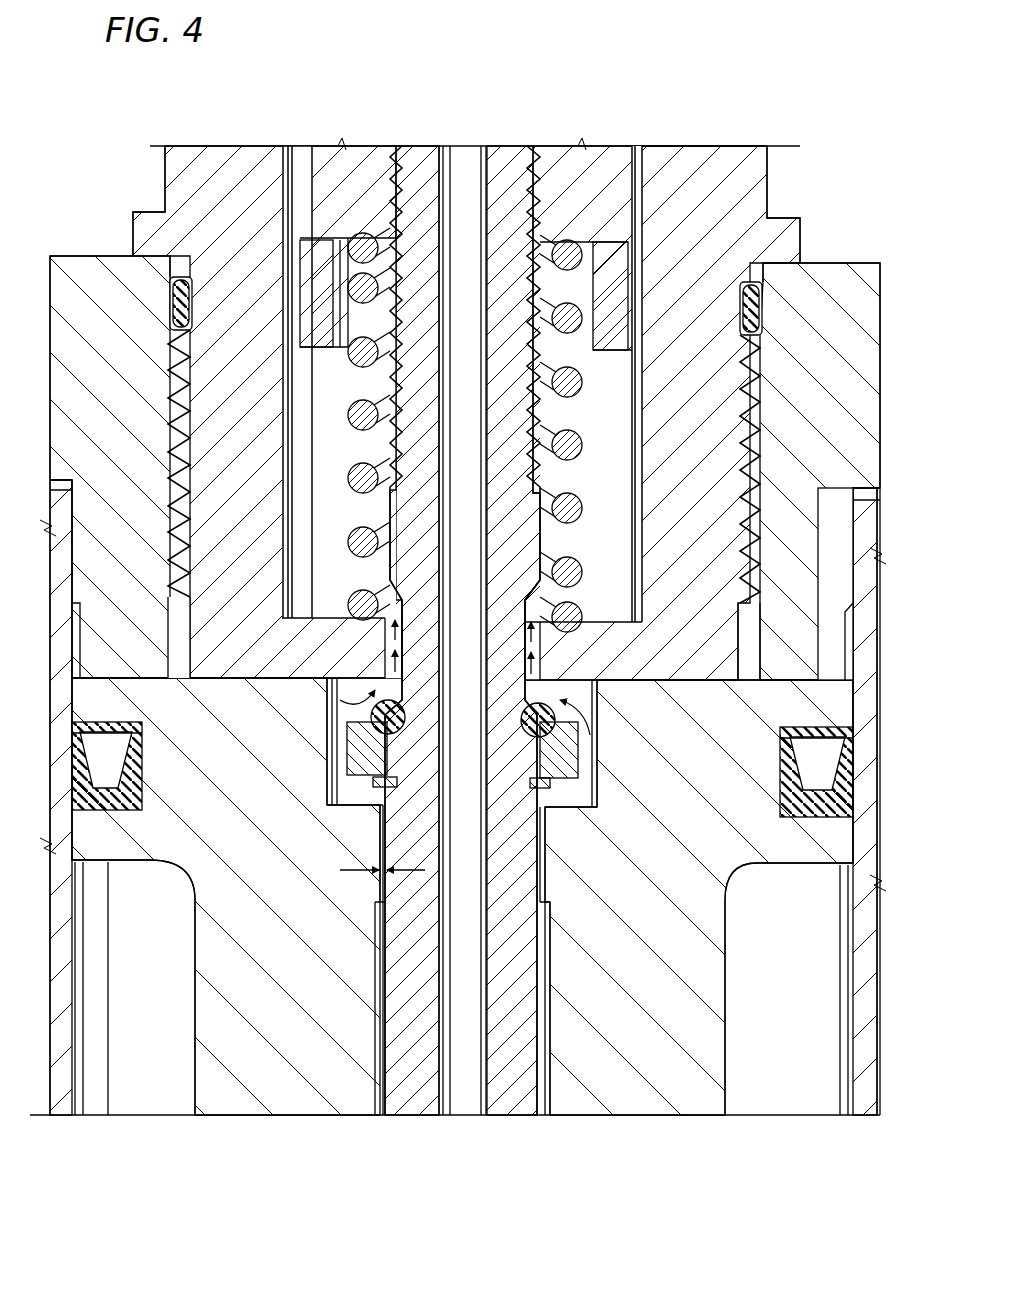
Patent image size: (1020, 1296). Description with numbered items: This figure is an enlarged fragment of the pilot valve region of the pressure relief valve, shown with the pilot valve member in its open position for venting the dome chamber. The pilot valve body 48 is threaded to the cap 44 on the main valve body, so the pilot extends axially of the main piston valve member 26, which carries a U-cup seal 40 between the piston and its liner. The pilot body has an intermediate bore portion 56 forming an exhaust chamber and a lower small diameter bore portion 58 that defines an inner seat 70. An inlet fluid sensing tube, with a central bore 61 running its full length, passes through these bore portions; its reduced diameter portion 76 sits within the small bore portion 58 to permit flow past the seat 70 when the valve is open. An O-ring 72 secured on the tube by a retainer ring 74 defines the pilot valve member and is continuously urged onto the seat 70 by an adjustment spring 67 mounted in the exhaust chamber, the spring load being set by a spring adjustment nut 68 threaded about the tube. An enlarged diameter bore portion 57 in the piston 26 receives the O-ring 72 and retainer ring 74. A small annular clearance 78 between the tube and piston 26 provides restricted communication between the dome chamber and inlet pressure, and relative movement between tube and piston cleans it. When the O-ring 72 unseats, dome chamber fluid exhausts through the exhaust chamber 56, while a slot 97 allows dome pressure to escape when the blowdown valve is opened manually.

The piston valve member 26 is at (210, 1012).
The U-cup seal 40 is at (132, 788).
The cap 44 is at (835, 275).
The pilot valve body 48 is at (753, 180).
The intermediate bore portion 56 is at (302, 480).
The enlarged diameter bore portion 57 is at (330, 810).
The lower small diameter bore portion 58 is at (385, 645).
The central bore 61 is at (480, 852).
The adjustment spring 67 is at (590, 497).
The spring adjustment nut 68 is at (315, 193).
The inner seat 70 is at (352, 706).
The O-ring 72 is at (580, 728).
The retainer ring 74 is at (578, 770).
The reduced diameter portion 76 is at (540, 650).
The annular clearance 78 is at (352, 875).
The slot 97 is at (832, 490).